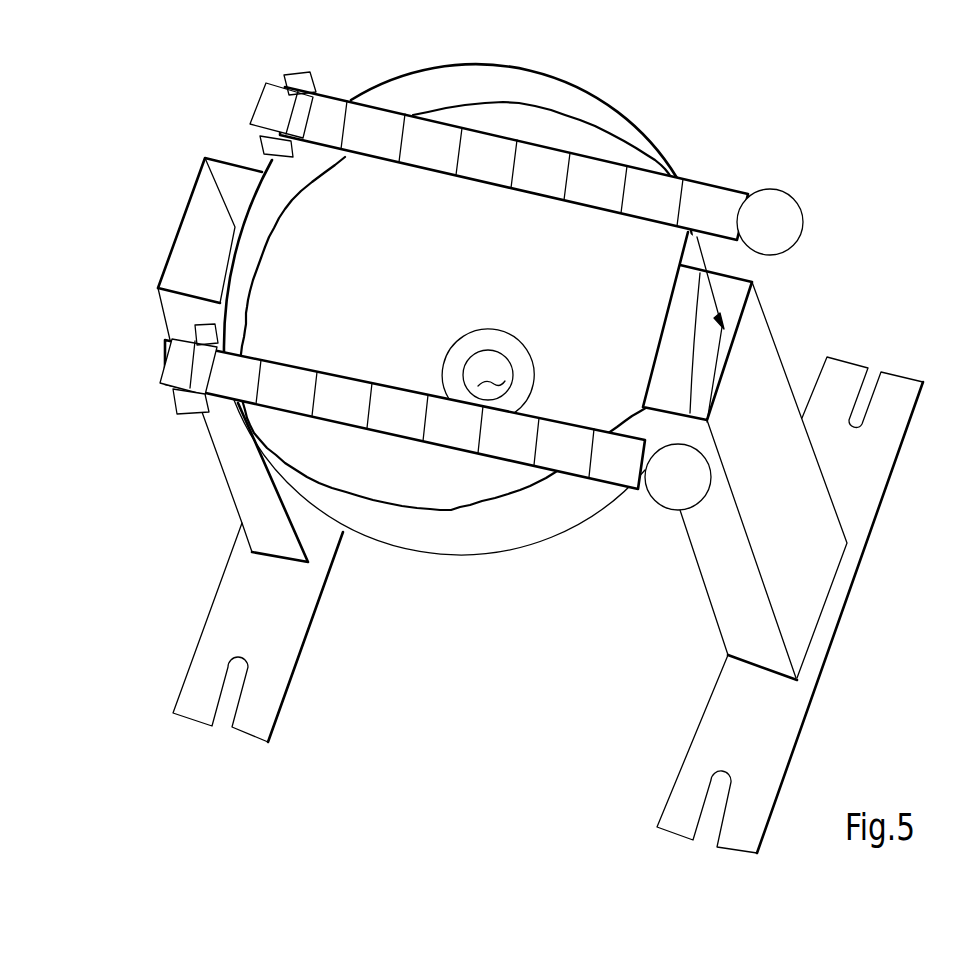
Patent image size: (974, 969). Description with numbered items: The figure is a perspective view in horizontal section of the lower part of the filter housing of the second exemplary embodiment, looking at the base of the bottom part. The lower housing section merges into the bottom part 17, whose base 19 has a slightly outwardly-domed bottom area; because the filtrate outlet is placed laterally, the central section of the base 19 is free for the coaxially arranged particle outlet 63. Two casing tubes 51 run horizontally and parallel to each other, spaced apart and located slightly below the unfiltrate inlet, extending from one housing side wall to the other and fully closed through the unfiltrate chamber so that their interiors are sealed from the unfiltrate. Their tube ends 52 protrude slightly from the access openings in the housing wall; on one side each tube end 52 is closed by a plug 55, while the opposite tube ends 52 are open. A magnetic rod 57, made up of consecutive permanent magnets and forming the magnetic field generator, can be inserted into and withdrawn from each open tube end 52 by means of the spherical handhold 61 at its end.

The bottom part 17 is at (503, 520).
The base 19 is at (625, 274).
The casing tubes 51 is at (363, 172).
The tube ends 52 is at (283, 78).
The plug 55 is at (275, 112).
The magnetic rod 57 is at (553, 183).
The spherical handhold 61 is at (770, 222).
The particle outlet 63 is at (498, 380).